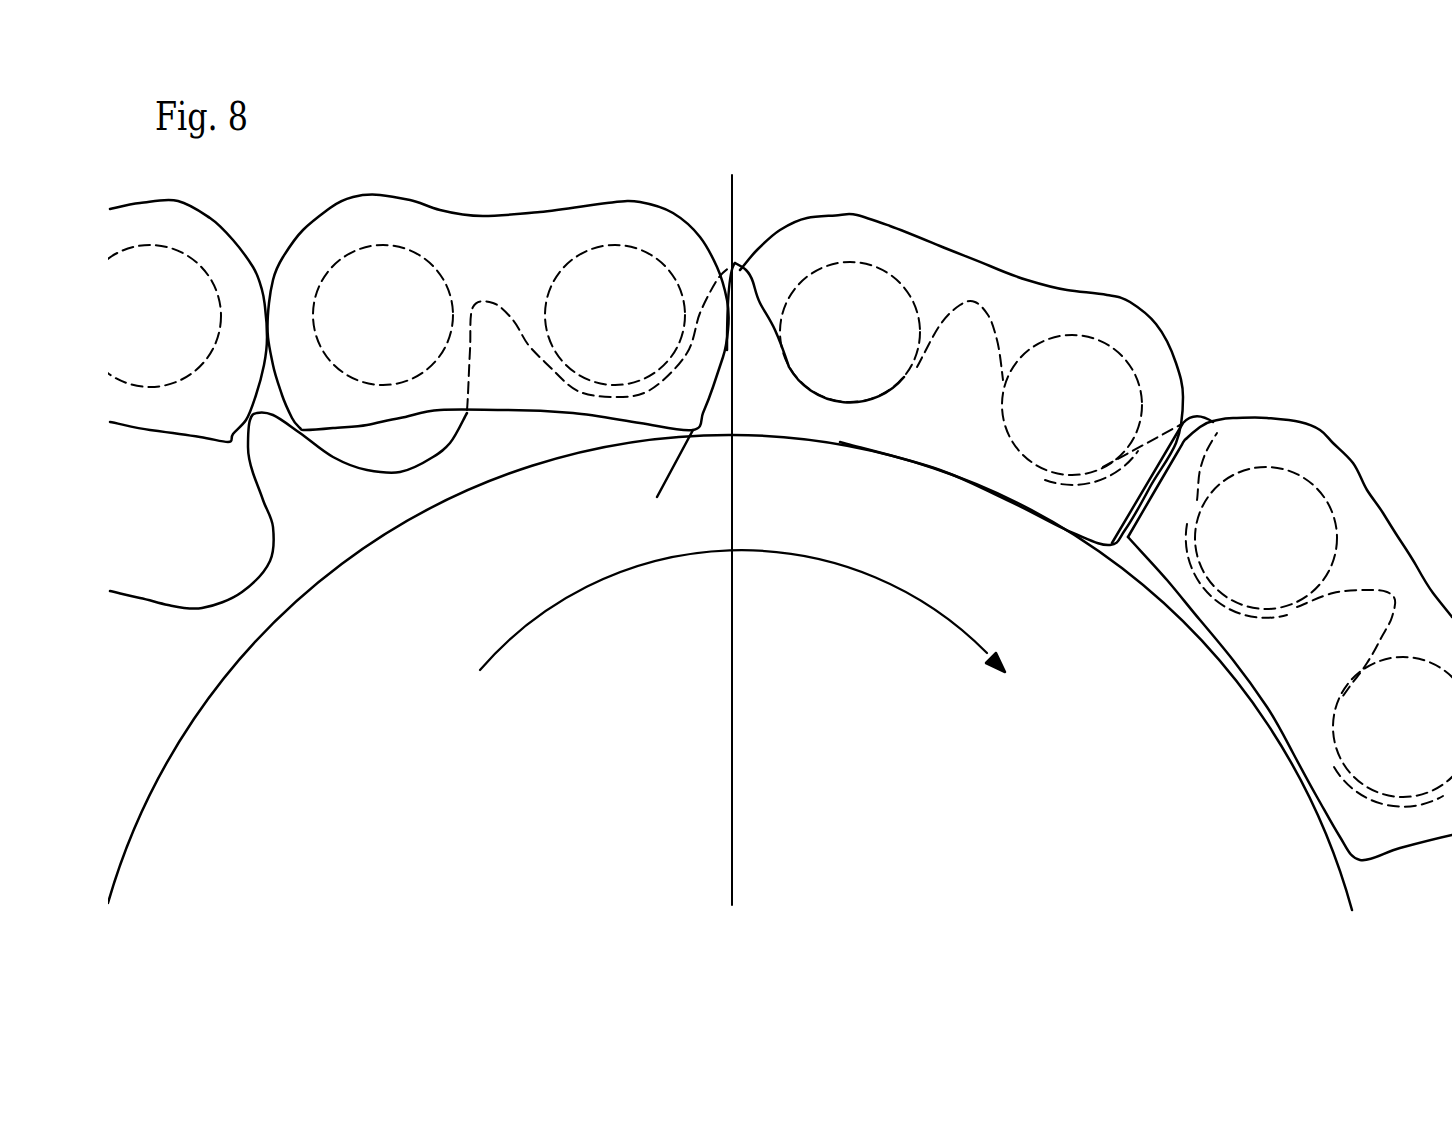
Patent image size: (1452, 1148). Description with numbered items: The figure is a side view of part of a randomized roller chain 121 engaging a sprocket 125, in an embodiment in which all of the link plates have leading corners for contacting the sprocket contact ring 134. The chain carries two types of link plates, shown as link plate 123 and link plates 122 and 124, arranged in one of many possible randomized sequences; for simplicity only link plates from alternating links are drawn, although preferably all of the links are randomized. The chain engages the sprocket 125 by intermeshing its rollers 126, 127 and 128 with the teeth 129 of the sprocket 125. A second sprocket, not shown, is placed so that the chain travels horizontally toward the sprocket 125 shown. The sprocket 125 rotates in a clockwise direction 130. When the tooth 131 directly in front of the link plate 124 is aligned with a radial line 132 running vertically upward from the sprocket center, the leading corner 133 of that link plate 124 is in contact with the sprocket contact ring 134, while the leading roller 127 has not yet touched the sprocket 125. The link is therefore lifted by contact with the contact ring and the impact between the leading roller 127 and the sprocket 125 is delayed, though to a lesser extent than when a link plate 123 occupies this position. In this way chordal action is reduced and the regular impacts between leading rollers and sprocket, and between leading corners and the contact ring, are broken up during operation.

The randomized roller chain 121 is at (1198, 225).
The link plate 122 is at (1313, 432).
The link plate 123 is at (218, 217).
The link plate 124 is at (658, 203).
The sprocket 125 is at (910, 787).
The roller 126 is at (1055, 415).
The leading roller 127 is at (605, 290).
The roller 128 is at (143, 347).
The tooth 129 is at (252, 422).
The clockwise direction 130 is at (751, 611).
The tooth 131 is at (737, 262).
The radial line 132 is at (764, 540).
The leading corner 133 is at (639, 487).
The sprocket contact ring 134 is at (236, 673).